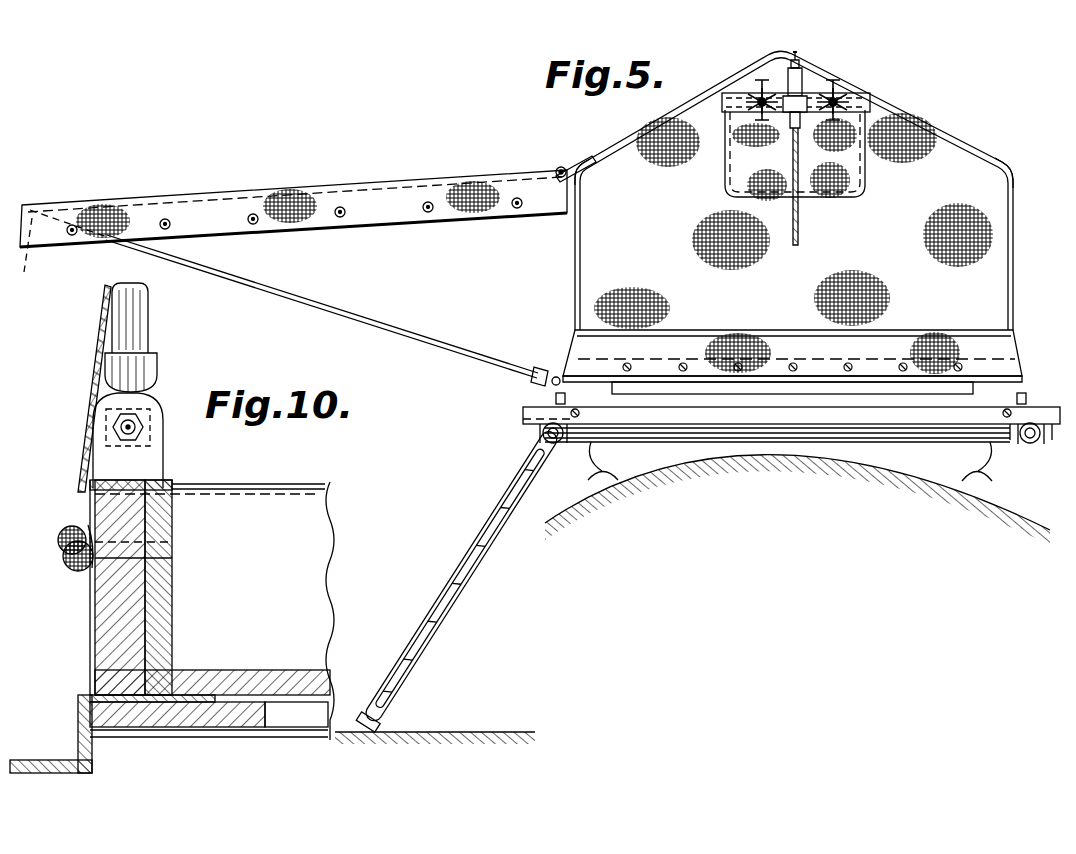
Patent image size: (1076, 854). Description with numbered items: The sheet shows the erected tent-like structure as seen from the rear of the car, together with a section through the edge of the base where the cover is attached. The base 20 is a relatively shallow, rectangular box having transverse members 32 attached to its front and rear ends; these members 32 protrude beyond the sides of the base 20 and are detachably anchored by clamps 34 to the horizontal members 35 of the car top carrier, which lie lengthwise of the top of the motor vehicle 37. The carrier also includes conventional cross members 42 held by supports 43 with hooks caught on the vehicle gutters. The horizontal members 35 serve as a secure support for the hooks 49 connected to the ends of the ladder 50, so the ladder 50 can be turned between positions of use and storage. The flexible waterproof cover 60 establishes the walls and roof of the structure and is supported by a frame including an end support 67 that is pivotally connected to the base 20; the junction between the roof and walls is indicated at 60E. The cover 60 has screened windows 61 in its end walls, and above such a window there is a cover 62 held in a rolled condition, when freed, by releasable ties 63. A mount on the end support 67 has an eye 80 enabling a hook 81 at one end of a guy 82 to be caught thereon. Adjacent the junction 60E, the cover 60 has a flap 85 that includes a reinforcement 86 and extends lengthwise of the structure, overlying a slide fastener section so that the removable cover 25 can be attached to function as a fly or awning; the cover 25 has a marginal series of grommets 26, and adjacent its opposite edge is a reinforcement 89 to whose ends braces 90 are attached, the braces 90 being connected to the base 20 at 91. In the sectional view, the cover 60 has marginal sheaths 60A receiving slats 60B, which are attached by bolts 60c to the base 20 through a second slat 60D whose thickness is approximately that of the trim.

In FIG. 5, the base 20 is at (884, 384).
In FIG. 10, the base 20 is at (90, 606).
In FIG. 5, the cover 25 is at (290, 182).
In FIG. 5, the grommets 26 is at (246, 218).
In FIG. 5, the transverse members 32 is at (527, 414).
In FIG. 10, the transverse members 32 is at (80, 718).
In FIG. 5, the clamps 34 is at (1046, 437).
In FIG. 5, the horizontal members 35 is at (1024, 442).
In FIG. 5, the motor vehicle 37 is at (747, 458).
In FIG. 5, the cross members 42 is at (600, 453).
In FIG. 5, the supports 43 is at (592, 481).
In FIG. 5, the hooks 49 is at (555, 445).
In FIG. 5, the ladder 50 is at (478, 526).
In FIG. 5, the cover 60 is at (652, 124).
In FIG. 5, the marginal sheaths 60A is at (648, 368).
In FIG. 10, the marginal sheaths 60A is at (70, 530).
In FIG. 10, the slats 60B is at (80, 566).
In FIG. 5, the bolts 60c is at (848, 365).
In FIG. 10, the bolts 60c is at (168, 537).
In FIG. 10, the second slat 60D is at (165, 560).
In FIG. 5, the junction 60E is at (592, 169).
In FIG. 5, the screened windows 61 is at (850, 133).
In FIG. 5, the cover 62 is at (868, 94).
In FIG. 5, the releasable ties 63 is at (762, 78).
In FIG. 10, the end support 67 is at (150, 306).
In FIG. 5, the eye 80 is at (802, 66).
In FIG. 5, the hook 81 is at (793, 52).
In FIG. 5, the guy 82 is at (800, 223).
In FIG. 5, the flap 85 is at (582, 156).
In FIG. 5, the reinforcement 86 is at (558, 168).
In FIG. 5, the reinforcement 89 is at (24, 274).
In FIG. 5, the braces 90 is at (288, 316).
In FIG. 5, the connection 91 is at (552, 374).